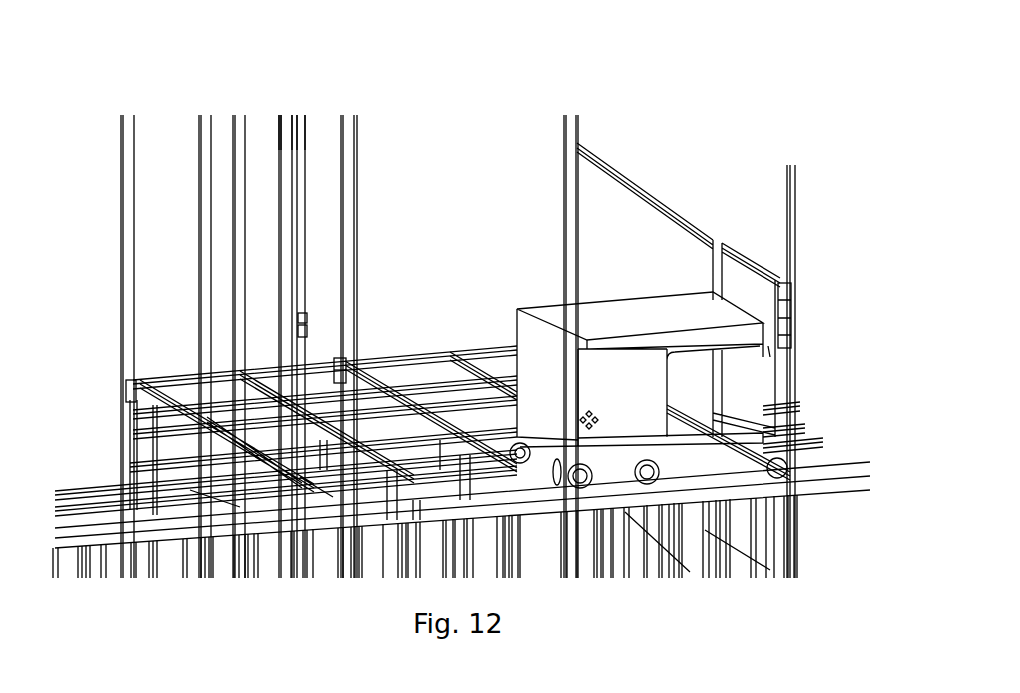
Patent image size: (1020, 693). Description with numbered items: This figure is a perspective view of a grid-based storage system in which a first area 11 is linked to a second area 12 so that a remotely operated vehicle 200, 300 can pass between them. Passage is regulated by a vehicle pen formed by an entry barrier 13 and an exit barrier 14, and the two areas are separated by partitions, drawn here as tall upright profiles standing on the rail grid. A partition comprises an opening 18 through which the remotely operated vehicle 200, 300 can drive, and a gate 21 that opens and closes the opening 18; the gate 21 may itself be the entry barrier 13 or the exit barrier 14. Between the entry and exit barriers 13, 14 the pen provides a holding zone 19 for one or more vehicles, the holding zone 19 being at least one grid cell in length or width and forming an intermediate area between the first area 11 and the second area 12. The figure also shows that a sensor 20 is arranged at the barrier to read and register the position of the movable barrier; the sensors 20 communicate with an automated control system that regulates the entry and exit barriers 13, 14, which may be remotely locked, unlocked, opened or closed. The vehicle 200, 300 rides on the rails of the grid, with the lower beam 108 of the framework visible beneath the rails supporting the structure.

The first area 11 is at (50, 470).
The second area 12 is at (873, 440).
The entry barrier 13 is at (499, 311).
The exit barrier 14 is at (499, 311).
The gate 21 is at (300, 148).
The opening 18 is at (320, 292).
The holding zone 19 is at (390, 168).
The sensor 20 is at (343, 358).
The horizontal beam 108 is at (865, 463).
The remotely operated vehicle 200 is at (609, 292).
The remotely operated vehicle 300 is at (530, 325).